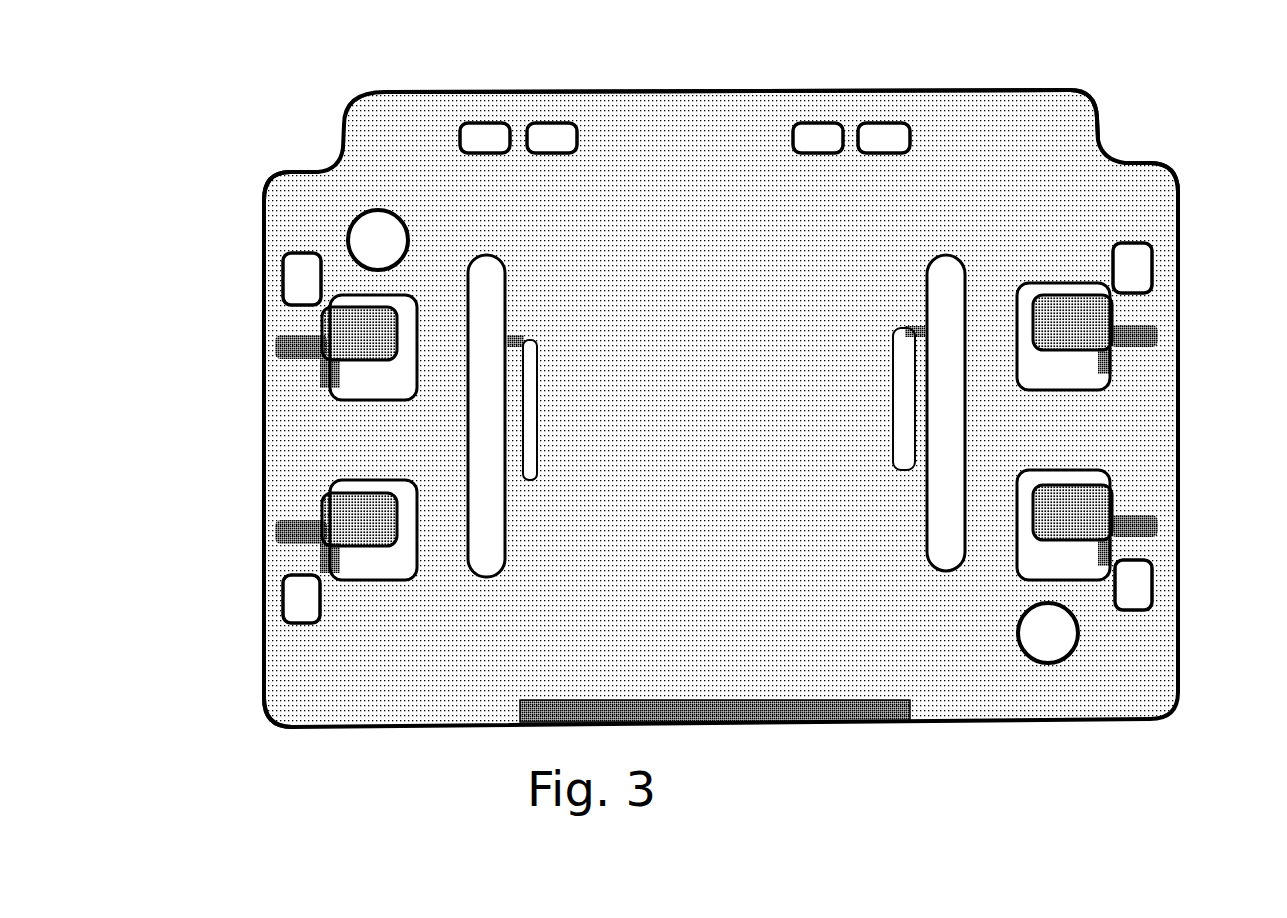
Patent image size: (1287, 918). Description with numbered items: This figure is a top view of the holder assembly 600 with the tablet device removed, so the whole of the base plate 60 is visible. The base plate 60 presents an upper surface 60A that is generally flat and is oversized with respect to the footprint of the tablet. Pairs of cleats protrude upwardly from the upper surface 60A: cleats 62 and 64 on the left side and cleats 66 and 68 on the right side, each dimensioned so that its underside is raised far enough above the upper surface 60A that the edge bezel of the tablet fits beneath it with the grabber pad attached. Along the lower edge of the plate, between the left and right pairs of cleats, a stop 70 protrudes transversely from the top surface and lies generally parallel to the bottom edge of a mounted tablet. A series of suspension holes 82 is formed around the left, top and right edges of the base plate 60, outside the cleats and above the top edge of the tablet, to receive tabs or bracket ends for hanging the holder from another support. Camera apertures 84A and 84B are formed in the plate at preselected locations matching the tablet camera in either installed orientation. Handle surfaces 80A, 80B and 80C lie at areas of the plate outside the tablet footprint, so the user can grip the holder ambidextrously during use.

The target mounting plate assembly 600 is at (664, 418).
The base plate 60 is at (406, 90).
The upper surface 60A is at (348, 708).
The handle surface 80A is at (265, 450).
The handle surface 80B is at (1147, 383).
The handle surface 80C is at (762, 128).
The suspension holes 82 is at (548, 135).
The camera aperture 84A is at (378, 240).
The camera aperture 84B is at (1043, 640).
The cleat 62 is at (358, 338).
The cleat 64 is at (345, 505).
The cleat 66 is at (1075, 310).
The cleat 68 is at (1058, 500).
The stop 70 is at (733, 722).